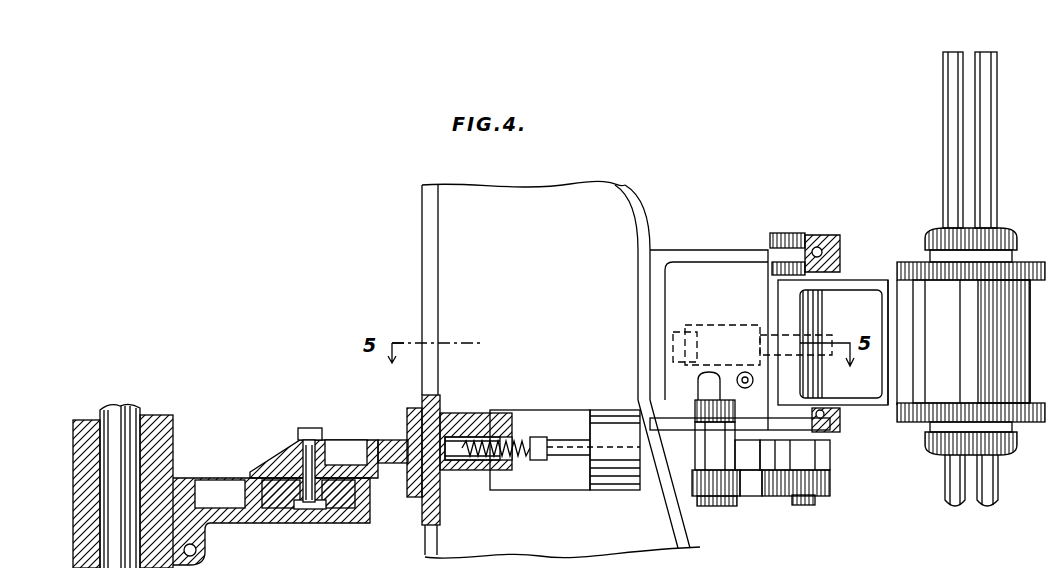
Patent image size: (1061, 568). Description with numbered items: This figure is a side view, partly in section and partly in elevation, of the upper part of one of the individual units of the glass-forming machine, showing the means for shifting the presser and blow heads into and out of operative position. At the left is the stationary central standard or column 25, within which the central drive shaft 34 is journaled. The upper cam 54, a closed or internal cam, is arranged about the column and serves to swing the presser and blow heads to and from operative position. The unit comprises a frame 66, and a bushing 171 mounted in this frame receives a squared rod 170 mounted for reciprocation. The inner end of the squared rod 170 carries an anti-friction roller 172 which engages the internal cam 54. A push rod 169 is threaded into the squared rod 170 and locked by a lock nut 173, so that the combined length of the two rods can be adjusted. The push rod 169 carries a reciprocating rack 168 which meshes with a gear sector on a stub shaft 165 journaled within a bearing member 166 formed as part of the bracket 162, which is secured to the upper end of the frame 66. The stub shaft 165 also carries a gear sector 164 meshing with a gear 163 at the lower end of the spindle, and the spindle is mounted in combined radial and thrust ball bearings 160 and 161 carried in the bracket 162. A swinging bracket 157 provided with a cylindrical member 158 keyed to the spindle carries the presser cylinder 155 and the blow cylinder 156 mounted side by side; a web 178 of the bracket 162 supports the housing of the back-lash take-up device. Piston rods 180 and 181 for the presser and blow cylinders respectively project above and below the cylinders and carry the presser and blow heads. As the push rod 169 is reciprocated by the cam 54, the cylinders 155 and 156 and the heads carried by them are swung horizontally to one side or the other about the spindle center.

The central standard or column 25 is at (73, 450).
The central drive shaft 34 is at (122, 494).
The upper cam 54 is at (258, 523).
The frame 66 is at (448, 258).
The presser cylinder 155 is at (937, 383).
The blow cylinder 156 is at (1024, 275).
The swinging bracket 157 is at (872, 288).
The cylindrical member 158 is at (825, 312).
The combined radial and thrust ball bearing 160 is at (842, 243).
The combined radial and thrust ball bearing 161 is at (840, 426).
The bracket 162 is at (692, 272).
The gear 163 is at (835, 487).
The gear sector 164 is at (768, 492).
The stub shaft 165 is at (720, 505).
The bearing member 166 is at (697, 413).
The reciprocating rack 168 is at (762, 450).
The push rod 169 is at (575, 453).
The squared rod 170 is at (452, 462).
The bushing 171 is at (502, 423).
The anti-friction roller 172 is at (340, 490).
The lock nut 173 is at (538, 438).
The web 178 is at (752, 329).
The piston rod 180 is at (948, 496).
The piston rod 181 is at (993, 494).